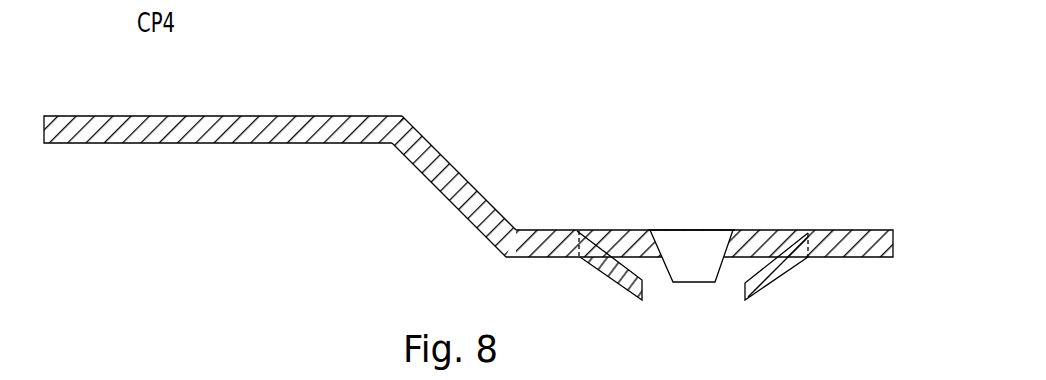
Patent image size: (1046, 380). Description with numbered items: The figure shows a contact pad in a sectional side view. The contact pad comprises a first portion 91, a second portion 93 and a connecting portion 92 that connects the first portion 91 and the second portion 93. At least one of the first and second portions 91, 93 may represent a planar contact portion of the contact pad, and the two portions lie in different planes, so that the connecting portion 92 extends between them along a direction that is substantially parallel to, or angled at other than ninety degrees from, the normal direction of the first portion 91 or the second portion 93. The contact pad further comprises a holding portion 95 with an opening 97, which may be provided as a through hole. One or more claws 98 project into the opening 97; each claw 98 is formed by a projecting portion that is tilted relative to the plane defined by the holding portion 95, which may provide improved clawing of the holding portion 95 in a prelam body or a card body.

The first portion 91 is at (263, 116).
The connecting portion 92 is at (461, 173).
The second portion 93 is at (565, 230).
The holding portion 95 is at (875, 268).
The opening 97 is at (693, 240).
The claw 98 is at (771, 300).